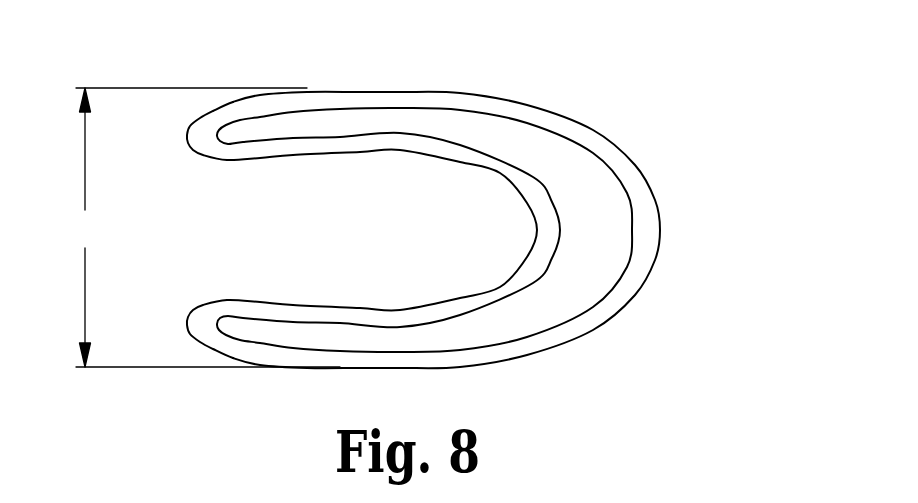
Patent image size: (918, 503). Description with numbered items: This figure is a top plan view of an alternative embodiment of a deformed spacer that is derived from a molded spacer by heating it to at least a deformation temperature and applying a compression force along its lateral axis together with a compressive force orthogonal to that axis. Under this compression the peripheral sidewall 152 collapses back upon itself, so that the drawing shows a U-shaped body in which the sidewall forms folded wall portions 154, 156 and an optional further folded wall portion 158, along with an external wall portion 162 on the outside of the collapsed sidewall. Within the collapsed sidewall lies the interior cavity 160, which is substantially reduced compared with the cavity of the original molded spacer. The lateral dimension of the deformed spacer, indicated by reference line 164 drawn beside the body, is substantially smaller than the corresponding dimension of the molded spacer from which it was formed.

The peripheral sidewall 152 is at (422, 205).
The folded wall portion 154 is at (187, 327).
The folded wall portion 156 is at (187, 136).
The folded wall portion 158 is at (536, 226).
The interior cavity 160 is at (583, 263).
The external wall portion 162 is at (407, 91).
The reference line 164 is at (206, 227).